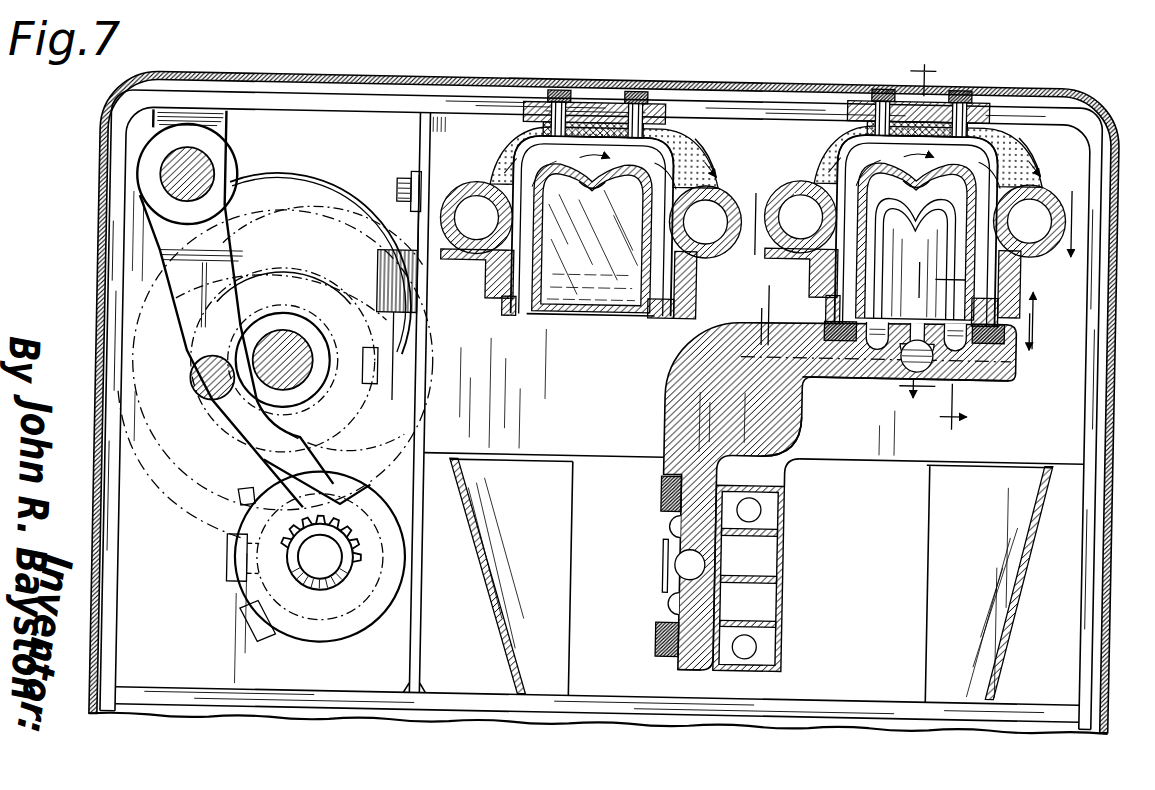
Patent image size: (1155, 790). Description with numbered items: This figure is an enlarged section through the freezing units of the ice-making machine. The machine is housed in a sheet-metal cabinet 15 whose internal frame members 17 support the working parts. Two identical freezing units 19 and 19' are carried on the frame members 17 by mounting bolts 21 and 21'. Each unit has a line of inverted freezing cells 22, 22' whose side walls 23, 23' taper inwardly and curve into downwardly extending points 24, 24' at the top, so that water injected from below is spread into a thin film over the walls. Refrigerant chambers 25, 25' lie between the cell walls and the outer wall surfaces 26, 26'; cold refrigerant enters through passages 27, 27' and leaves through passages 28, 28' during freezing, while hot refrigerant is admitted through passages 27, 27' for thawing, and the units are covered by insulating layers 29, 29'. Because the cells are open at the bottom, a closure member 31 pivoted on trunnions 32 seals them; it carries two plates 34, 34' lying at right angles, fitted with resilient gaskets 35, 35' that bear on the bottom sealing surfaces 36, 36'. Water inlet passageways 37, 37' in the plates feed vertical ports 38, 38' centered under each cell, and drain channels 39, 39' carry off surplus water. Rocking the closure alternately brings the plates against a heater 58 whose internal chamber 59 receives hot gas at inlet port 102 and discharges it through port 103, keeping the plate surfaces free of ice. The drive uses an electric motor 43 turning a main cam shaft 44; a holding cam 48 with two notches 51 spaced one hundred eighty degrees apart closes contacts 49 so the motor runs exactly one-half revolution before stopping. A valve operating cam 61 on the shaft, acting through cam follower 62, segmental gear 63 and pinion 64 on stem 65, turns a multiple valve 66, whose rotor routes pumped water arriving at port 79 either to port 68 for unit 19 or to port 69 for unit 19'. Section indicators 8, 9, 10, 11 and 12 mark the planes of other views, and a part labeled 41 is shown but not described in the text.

The section line 8- 8 is at (914, 206).
The section line 9- 9 is at (920, 227).
The section line 10- 10 is at (957, 339).
The section line 11- 11 is at (918, 314).
The section line 12- 12 is at (900, 331).
The cabinet 15 is at (95, 161).
The internal frame members 17 is at (378, 108).
The freezing unit 19 is at (956, 190).
The freezing unit 19' is at (575, 180).
The mounting bolts 21 is at (930, 85).
The mounting bolts 21' is at (595, 87).
The inverted freezing cells 22 is at (916, 242).
The inverted freezing cells 22' is at (592, 238).
The side walls 23 is at (905, 384).
The side walls 23' is at (590, 334).
The downwardly extending points 24 is at (974, 162).
The downwardly extending points 24' is at (653, 158).
The refrigerant chamber 25 is at (894, 189).
The refrigerant chamber 25' is at (567, 287).
The outer wall surface 26 is at (1020, 118).
The outer wall surface 26' is at (708, 113).
The passage 27 is at (800, 216).
The passage 27' is at (476, 217).
The passage 28 is at (1029, 221).
The passage 28' is at (705, 221).
The insulating layer 29 is at (912, 154).
The insulating layer 29' is at (587, 155).
The closure member 31 is at (663, 383).
The trunnions 32 is at (796, 426).
The outwardly extending plate 34 is at (883, 394).
The outwardly extending plate 34' is at (660, 672).
The resilient gasket 35 is at (928, 368).
The resilient gasket 35' is at (646, 560).
The bottom sealing surface 36 is at (958, 307).
The bottom sealing surface 36' is at (587, 325).
The water inlet passageway 37 is at (910, 392).
The water inlet passageway 37' is at (657, 566).
The vertical ports 38 is at (924, 328).
The vertical ports 38' is at (639, 562).
The drain channels 39 is at (967, 379).
The drain channels 39' is at (645, 551).
The baffle 41 is at (1024, 606).
The electric motor 43 is at (327, 188).
The main cam shaft 44 is at (278, 336).
The holding cam 48 is at (338, 452).
The contacts 49 is at (404, 376).
The notches 51 is at (352, 360).
The heater 58 is at (787, 593).
The internal chamber 59 is at (763, 556).
The valve operating cam 61 is at (182, 492).
The cam follower 62 is at (212, 408).
The segmental gear 63 is at (372, 503).
The pinion 64 is at (330, 572).
The stem 65 is at (334, 600).
The multiple valve 66 is at (317, 640).
The port 68 is at (238, 503).
The port 69 is at (269, 636).
The port 79 is at (230, 568).
The inlet port 102 is at (766, 507).
The port 103 is at (779, 666).